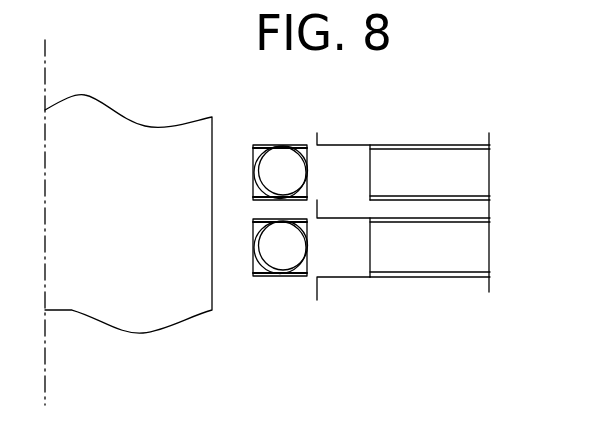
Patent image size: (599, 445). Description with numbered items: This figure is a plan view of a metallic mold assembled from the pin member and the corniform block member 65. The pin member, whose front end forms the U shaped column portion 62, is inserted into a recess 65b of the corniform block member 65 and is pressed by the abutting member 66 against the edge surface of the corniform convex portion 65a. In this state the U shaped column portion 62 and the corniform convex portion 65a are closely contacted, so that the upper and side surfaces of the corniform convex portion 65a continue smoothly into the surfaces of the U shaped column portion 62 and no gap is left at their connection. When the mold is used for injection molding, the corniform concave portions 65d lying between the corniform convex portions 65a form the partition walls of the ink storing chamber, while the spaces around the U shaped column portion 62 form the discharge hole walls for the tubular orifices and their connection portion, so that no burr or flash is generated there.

The abutting member 66 is at (163, 313).
The U shaped column portion 62 is at (263, 277).
The corniform block member 65 is at (445, 254).
The corniform convex portion 65a is at (467, 257).
The recess 65b is at (342, 255).
The corniform concave portion 65d is at (473, 135).